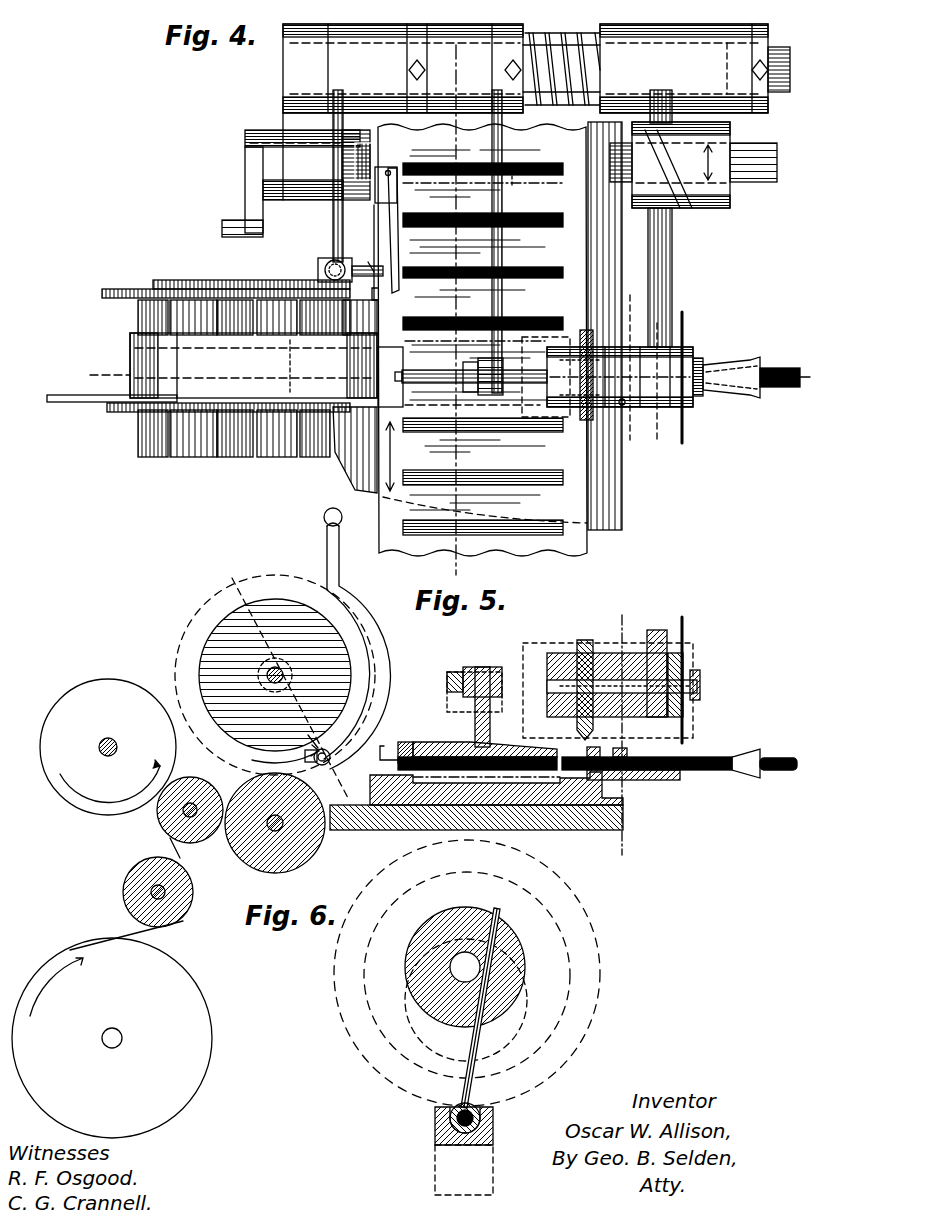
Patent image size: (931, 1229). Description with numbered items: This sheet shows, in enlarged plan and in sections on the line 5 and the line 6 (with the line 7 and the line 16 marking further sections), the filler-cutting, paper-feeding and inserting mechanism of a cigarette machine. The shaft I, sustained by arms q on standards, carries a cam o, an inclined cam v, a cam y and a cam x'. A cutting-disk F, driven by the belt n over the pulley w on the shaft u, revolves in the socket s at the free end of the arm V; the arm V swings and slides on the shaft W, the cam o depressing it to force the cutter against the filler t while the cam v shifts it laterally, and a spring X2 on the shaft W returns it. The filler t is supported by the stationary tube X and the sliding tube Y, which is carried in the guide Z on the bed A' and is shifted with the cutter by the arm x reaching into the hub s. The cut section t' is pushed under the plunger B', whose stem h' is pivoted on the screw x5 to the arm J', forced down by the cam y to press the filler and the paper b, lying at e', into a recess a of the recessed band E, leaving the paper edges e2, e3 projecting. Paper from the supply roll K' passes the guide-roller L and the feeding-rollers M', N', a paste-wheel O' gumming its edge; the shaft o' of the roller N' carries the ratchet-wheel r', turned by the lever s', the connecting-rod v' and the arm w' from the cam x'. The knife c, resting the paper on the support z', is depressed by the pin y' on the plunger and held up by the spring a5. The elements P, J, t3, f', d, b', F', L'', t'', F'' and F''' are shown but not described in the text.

In FIG. 4, the section line 7 is at (455, 318).
In FIG. 4, the roller P is at (403, 112).
In FIG. 4, the shaft W is at (561, 61).
In FIG. 4, the spring X2 is at (600, 70).
In FIG. 4, the arm V is at (682, 278).
In FIG. 5, the arm V is at (668, 632).
In FIG. 4, the cam o is at (681, 165).
In FIG. 4, the inclined cam v is at (648, 162).
In FIG. 4, the shaft I is at (752, 185).
In FIG. 4, the bed A' is at (492, 326).
In FIG. 5, the bed A' is at (492, 817).
In FIG. 4, the recessed band E is at (480, 340).
In FIG. 5, the recessed band E is at (570, 805).
In FIG. 4, the recess a is at (545, 495).
In FIG. 5, the recess a is at (402, 831).
In FIG. 4, the rod J is at (505, 241).
In FIG. 4, the cam y is at (512, 187).
In FIG. 4, the paper edge e3 is at (428, 268).
In FIG. 4, the paper edge e2 is at (475, 314).
In FIG. 4, the bracket t3 is at (560, 278).
In FIG. 4, the arm q is at (302, 173).
In FIG. 4, the foot f' is at (242, 217).
In FIG. 4, the cam x' is at (357, 157).
In FIG. 4, the arm w' is at (349, 186).
In FIG. 4, the bracket d is at (386, 185).
In FIG. 4, the spring a5 is at (388, 230).
In FIG. 4, the pin b' is at (367, 258).
In FIG. 4, the knife c is at (381, 302).
In FIG. 5, the knife c is at (384, 745).
In FIG. 4, the paper b is at (390, 377).
In FIG. 5, the paper b is at (379, 767).
In FIG. 4, the ratchet-wheel r' is at (226, 284).
In FIG. 5, the ratchet-wheel r' is at (275, 681).
In FIG. 4, the lever s' is at (251, 276).
In FIG. 5, the lever s' is at (309, 733).
In FIG. 4, the feeding-roller N' is at (253, 378).
In FIG. 5, the feeding-roller N' is at (271, 675).
In FIG. 4, the shaft o' is at (228, 422).
In FIG. 4, the paste-wheel O' is at (112, 390).
In FIG. 5, the paste-wheel O' is at (172, 730).
In FIG. 4, the section line 5 is at (447, 375).
In FIG. 4, the paper position e' is at (471, 378).
In FIG. 5, the paper position e' is at (539, 821).
In FIG. 4, the socket s is at (620, 377).
In FIG. 5, the socket s is at (608, 687).
In FIG. 6, the socket s is at (475, 967).
In FIG. 4, the belt n is at (584, 422).
In FIG. 5, the belt n is at (585, 738).
In FIG. 4, the arm x is at (632, 415).
In FIG. 5, the arm x is at (635, 726).
In FIG. 6, the arm x is at (466, 1000).
In FIG. 4, the tube X is at (726, 386).
In FIG. 5, the tube X is at (717, 785).
In FIG. 4, the filler t is at (780, 389).
In FIG. 5, the filler t is at (679, 769).
In FIG. 6, the filler t is at (489, 1008).
In FIG. 4, the cutting-disk F is at (692, 377).
In FIG. 5, the cutting-disk F is at (686, 680).
In FIG. 4, the disk F' is at (665, 395).
In FIG. 5, the disk F' is at (660, 656).
In FIG. 4, the section line 6 is at (632, 369).
In FIG. 5, the section line 6 is at (622, 732).
In FIG. 5, the section line 16 is at (281, 678).
In FIG. 5, the connecting-rod v' is at (362, 638).
In FIG. 5, the roller L'' is at (191, 821).
In FIG. 5, the feeding-roller M' is at (275, 831).
In FIG. 5, the guide-roller L is at (166, 892).
In FIG. 5, the paper-supply roll K' is at (112, 1029).
In FIG. 5, the support z' is at (359, 791).
In FIG. 5, the pin y' is at (405, 735).
In FIG. 5, the plunger B' is at (485, 738).
In FIG. 5, the cut section of filler t' is at (477, 738).
In FIG. 5, the stem h' is at (494, 707).
In FIG. 5, the arm J' is at (485, 672).
In FIG. 5, the screw x5 is at (470, 690).
In FIG. 5, the shaft u is at (547, 688).
In FIG. 6, the shaft u is at (465, 967).
In FIG. 5, the strip t'' is at (530, 733).
In FIG. 5, the guide Z is at (640, 780).
In FIG. 6, the guide Z is at (493, 1135).
In FIG. 5, the sliding tube Y is at (646, 771).
In FIG. 6, the sliding tube Y is at (472, 1104).
In FIG. 6, the circle F'' is at (467, 973).
In FIG. 6, the circle F''' is at (492, 975).